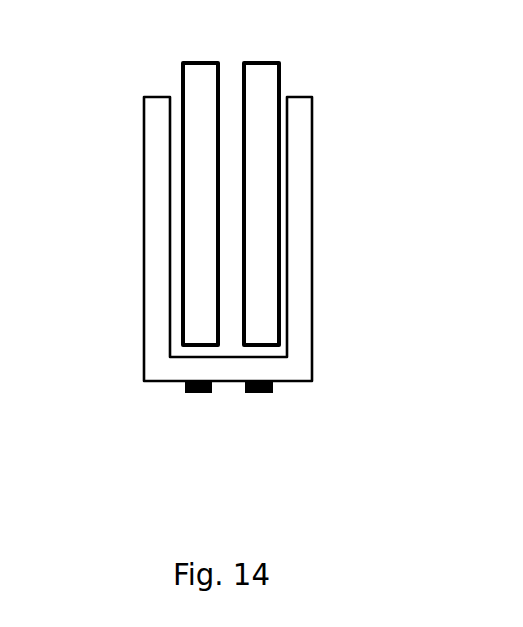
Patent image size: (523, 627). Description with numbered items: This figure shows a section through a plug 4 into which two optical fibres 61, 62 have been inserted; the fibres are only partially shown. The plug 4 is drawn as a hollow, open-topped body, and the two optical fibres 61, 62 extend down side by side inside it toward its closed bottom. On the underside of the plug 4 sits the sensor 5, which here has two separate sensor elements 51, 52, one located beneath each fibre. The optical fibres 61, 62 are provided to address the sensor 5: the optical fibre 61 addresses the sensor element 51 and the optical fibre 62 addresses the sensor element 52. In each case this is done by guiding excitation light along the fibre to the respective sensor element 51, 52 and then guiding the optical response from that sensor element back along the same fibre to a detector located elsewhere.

The plug 4 is at (143, 142).
The sensor 5 is at (298, 390).
The sensor element 51 is at (203, 395).
The sensor element 52 is at (260, 395).
The optical fibre 61 is at (202, 61).
The optical fibre 62 is at (257, 61).